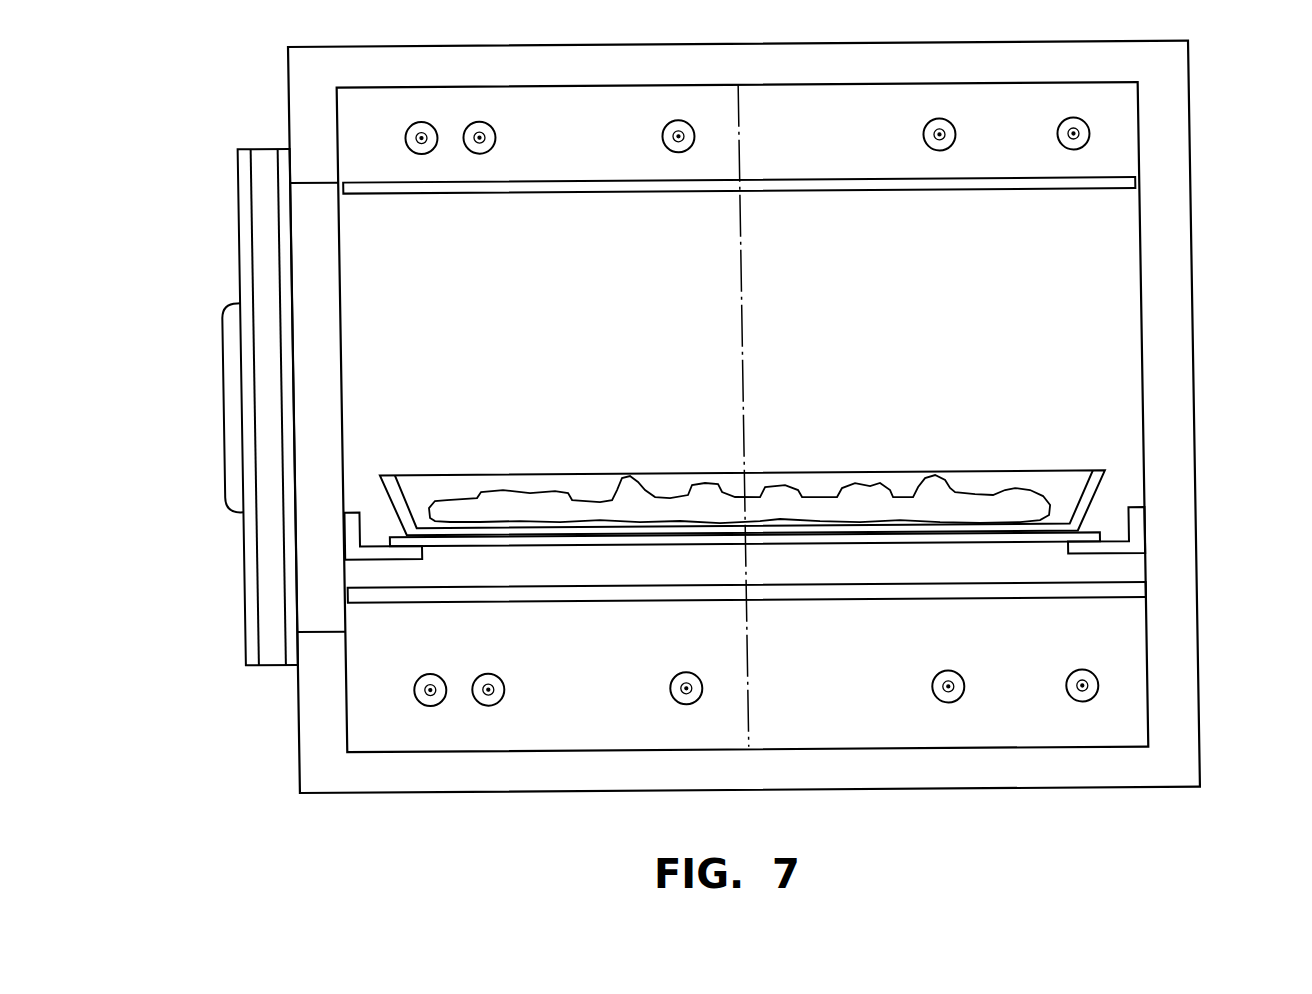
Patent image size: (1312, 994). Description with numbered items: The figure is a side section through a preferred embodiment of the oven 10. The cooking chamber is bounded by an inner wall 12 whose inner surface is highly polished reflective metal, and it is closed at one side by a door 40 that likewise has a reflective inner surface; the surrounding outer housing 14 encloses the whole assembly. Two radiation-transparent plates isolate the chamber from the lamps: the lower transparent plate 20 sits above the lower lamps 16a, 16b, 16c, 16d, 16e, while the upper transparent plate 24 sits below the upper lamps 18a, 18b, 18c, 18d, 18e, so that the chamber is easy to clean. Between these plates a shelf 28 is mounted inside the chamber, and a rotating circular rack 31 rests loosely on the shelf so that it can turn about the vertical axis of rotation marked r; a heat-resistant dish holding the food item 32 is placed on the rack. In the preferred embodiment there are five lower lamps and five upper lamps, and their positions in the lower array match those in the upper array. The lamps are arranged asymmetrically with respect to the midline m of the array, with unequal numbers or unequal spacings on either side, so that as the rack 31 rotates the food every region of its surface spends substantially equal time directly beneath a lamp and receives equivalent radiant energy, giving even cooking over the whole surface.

The oven 10 is at (1187, 372).
The inner wall 12 is at (1137, 343).
The outer housing 14 is at (1166, 286).
The lower lamp 16a is at (412, 678).
The lower lamp 16b is at (492, 684).
The lower lamp 16c is at (675, 675).
The lower lamp 16d is at (953, 693).
The lower lamp 16e is at (1087, 684).
The upper lamp 18a is at (412, 130).
The upper lamp 18b is at (491, 145).
The upper lamp 18c is at (664, 140).
The upper lamp 18d is at (948, 148).
The upper lamp 18e is at (1084, 136).
The lower transparent plate 20 is at (831, 596).
The upper transparent plate 24 is at (928, 192).
The shelf 28 is at (362, 554).
The rotating circular rack 31 is at (449, 546).
The food product 32 is at (890, 504).
The door 40 is at (218, 245).